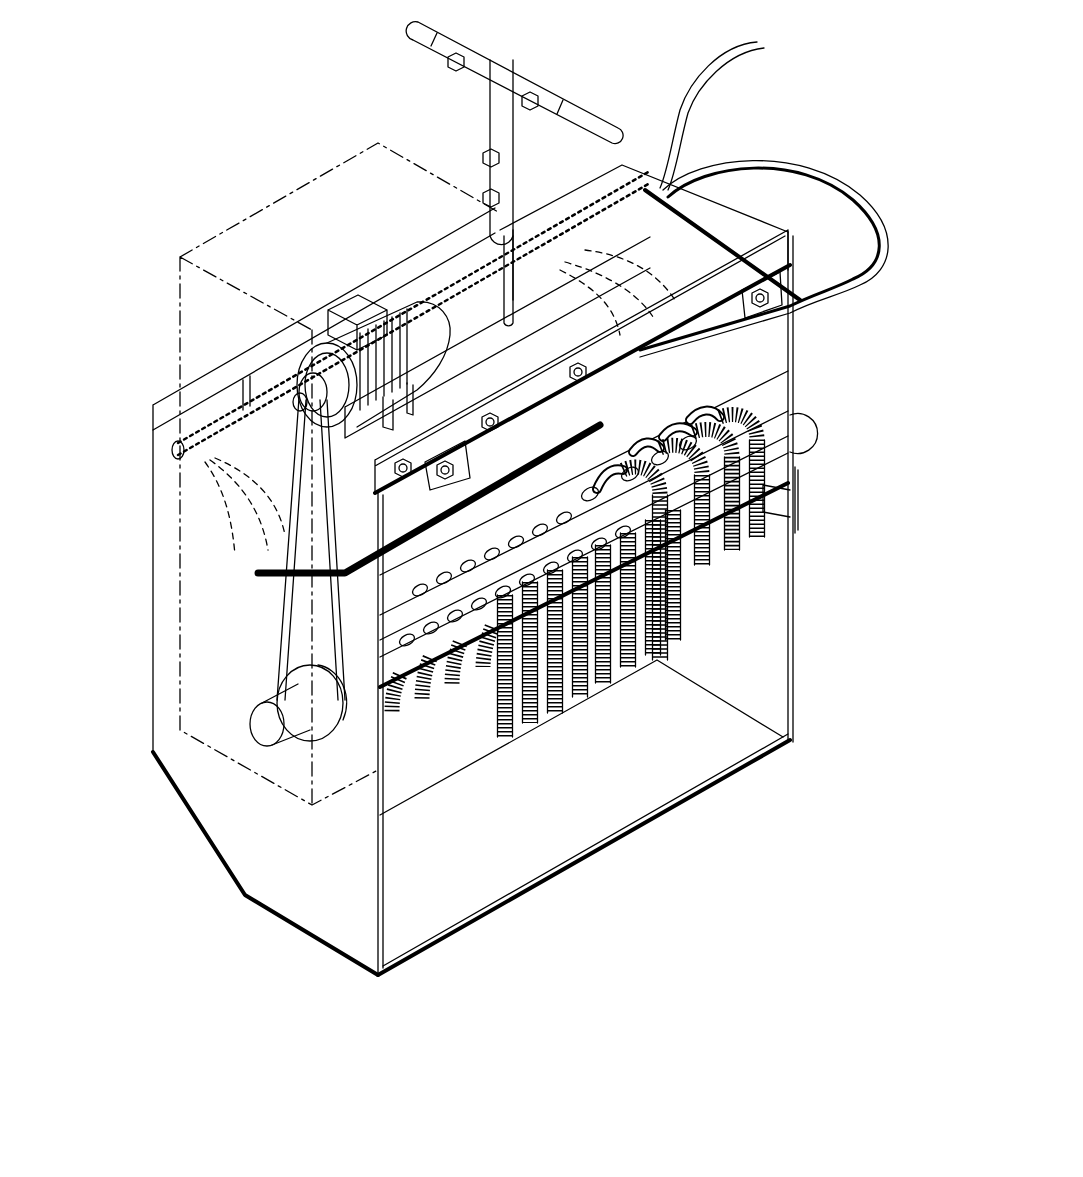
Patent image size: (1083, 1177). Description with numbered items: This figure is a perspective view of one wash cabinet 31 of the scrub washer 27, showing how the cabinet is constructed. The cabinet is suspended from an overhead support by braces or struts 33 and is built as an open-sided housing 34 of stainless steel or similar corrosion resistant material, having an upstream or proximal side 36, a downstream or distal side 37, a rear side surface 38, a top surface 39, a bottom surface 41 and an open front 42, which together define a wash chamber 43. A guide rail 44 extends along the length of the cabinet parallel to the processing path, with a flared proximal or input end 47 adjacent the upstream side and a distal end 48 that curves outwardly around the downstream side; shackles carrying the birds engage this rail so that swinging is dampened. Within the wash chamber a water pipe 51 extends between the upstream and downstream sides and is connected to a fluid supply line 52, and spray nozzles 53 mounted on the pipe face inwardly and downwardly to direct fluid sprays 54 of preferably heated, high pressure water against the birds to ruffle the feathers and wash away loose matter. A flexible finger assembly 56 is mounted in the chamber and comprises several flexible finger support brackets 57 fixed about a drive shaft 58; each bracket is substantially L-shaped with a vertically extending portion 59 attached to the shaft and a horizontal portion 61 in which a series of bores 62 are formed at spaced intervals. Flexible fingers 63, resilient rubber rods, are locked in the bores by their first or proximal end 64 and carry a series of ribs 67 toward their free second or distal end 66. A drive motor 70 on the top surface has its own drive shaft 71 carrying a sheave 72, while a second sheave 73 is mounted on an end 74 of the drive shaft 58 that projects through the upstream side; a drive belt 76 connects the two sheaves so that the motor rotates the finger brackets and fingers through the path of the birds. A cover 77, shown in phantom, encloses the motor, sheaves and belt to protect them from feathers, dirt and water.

The scrub washer 27 is at (68, 190).
The wash cabinet 31 is at (491, 635).
The braces or struts 33 is at (505, 70).
The open-sided housing 34 is at (190, 808).
The upstream or proximal side 36 is at (307, 890).
The downstream or distal side 37 is at (785, 572).
The rear side surface 38 is at (152, 512).
The top surface 39 is at (715, 248).
The bottom surface 41 is at (395, 978).
The open front 42 is at (750, 752).
The wash chamber 43 is at (700, 668).
The guide rail 44 is at (779, 230).
The proximal or input end 47 is at (265, 570).
The distal end 48 is at (838, 178).
The water pipe 51 is at (168, 455).
The fluid supply line 52 is at (688, 100).
The spray nozzles 53 is at (547, 240).
The fluid sprays 54 is at (575, 275).
The flexible finger assembly 56 is at (764, 413).
The flexible finger support brackets 57 is at (585, 571).
The drive shaft 58 is at (278, 735).
The vertically extending portion 59 is at (455, 660).
The horizontal portion 61 is at (585, 571).
The bores 62 is at (418, 711).
The flexible fingers 63 is at (663, 509).
The first or proximal end 64 is at (588, 482).
The second or distal end 66 is at (500, 735).
The ribs 67 is at (735, 430).
The drive motor 70 is at (440, 348).
The drive shaft 71 is at (278, 385).
The sheave 72 is at (305, 378).
The sheave 73 is at (272, 731).
The end 74 is at (268, 710).
The drive belt 76 is at (290, 545).
The cover 77 is at (278, 205).